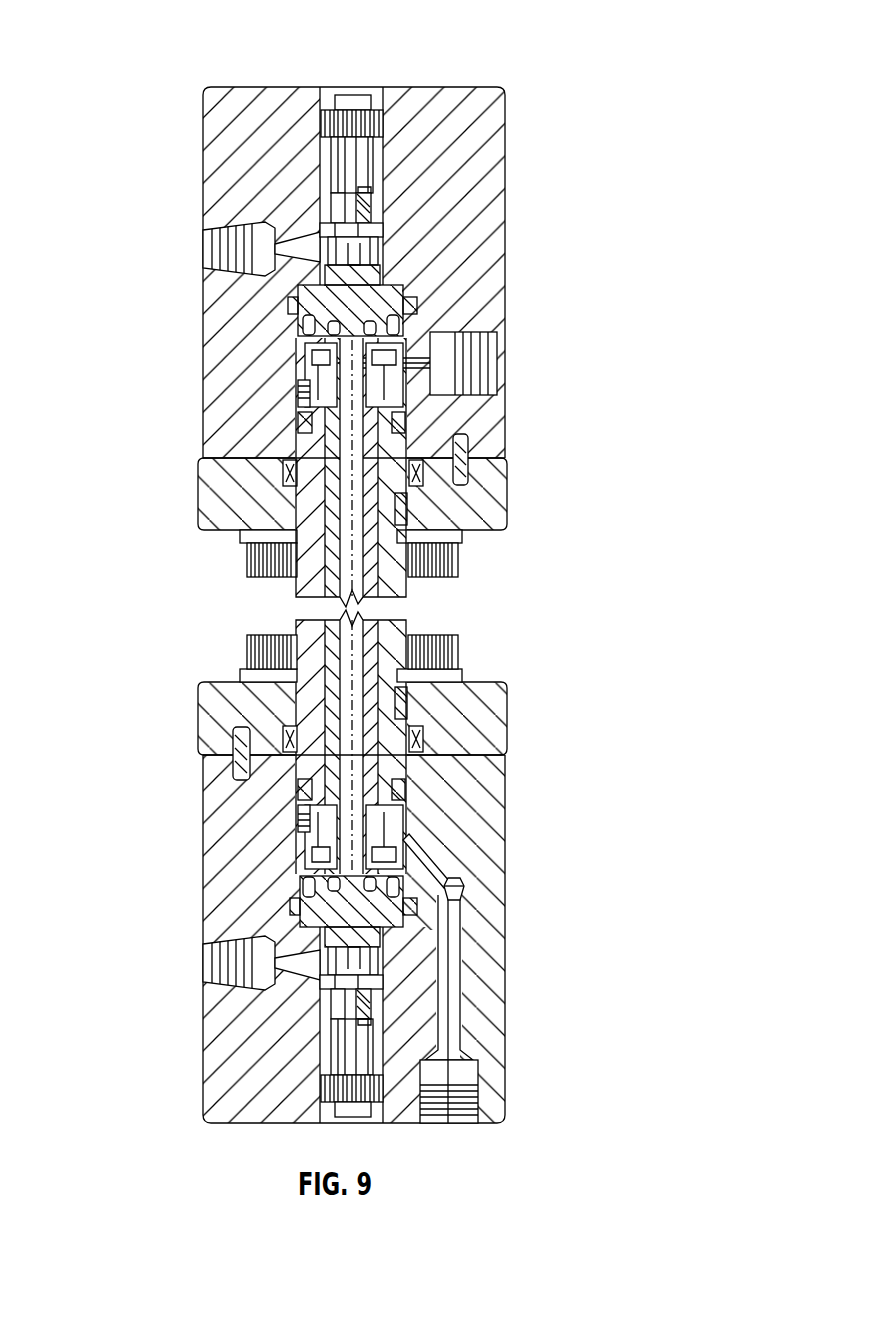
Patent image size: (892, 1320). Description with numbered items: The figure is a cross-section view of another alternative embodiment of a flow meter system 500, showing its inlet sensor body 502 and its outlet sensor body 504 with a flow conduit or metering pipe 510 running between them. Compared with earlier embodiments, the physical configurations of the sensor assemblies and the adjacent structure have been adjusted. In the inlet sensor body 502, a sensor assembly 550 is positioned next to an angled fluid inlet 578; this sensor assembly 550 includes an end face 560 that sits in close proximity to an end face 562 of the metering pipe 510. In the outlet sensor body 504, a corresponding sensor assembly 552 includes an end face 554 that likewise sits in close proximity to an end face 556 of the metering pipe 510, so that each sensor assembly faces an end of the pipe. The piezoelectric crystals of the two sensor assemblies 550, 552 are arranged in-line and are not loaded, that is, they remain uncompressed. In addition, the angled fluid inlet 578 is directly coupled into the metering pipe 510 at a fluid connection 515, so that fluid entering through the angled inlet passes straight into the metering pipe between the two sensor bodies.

The flow meter system 500 is at (374, 570).
The inlet sensor body 502 is at (184, 1104).
The outlet sensor body 504 is at (186, 168).
The metering pipe 510 is at (400, 692).
The fluid connection 515 is at (415, 838).
The sensor assembly 550 is at (400, 918).
The sensor assembly 552 is at (405, 292).
The end face 554 is at (298, 330).
The end face 556 is at (412, 332).
The end face 560 is at (300, 895).
The end face 562 is at (305, 880).
The angled fluid inlet 578 is at (462, 893).